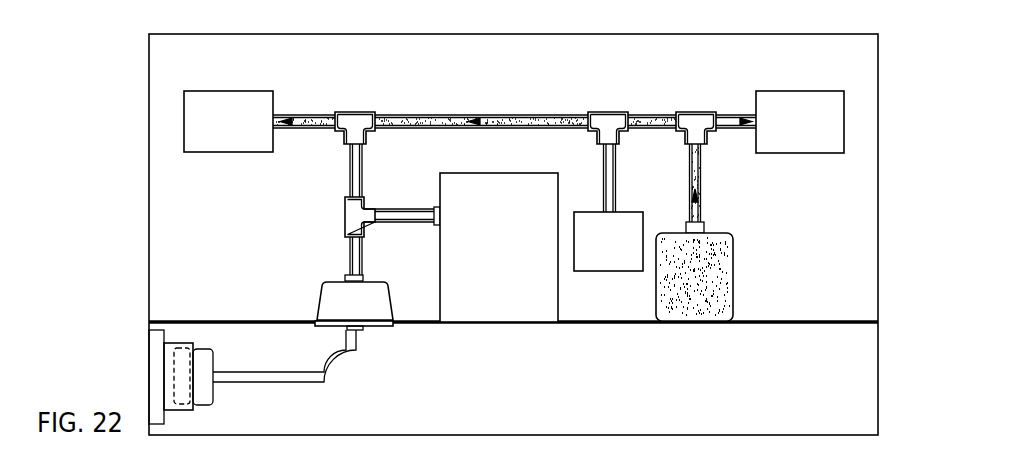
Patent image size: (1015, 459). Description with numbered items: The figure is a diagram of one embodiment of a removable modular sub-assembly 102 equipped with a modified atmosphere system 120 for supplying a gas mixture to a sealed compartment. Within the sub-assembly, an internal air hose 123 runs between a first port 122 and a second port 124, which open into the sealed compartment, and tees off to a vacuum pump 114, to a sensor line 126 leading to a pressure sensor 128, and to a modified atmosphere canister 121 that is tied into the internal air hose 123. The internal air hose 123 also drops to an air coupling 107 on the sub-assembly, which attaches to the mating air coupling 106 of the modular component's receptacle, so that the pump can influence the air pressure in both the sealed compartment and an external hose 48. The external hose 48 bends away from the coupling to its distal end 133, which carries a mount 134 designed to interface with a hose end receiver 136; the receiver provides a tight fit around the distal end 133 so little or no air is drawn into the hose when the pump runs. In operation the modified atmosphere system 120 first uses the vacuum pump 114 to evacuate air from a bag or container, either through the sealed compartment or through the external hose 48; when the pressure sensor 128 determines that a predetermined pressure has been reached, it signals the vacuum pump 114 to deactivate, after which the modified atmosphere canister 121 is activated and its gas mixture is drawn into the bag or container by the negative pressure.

The modified atmosphere system 120 is at (878, 84).
The modular sub-assembly 102 is at (905, 204).
The first port 122 is at (252, 91).
The second port 124 is at (816, 91).
The internal air hose 123 is at (418, 116).
The vacuum pump 114 is at (525, 173).
The sensor line 126 is at (616, 178).
The pressure sensor 128 is at (634, 212).
The modified atmosphere canister 121 is at (733, 255).
The air coupling 107 is at (373, 282).
The air coupling 106 is at (384, 328).
The external hose 48 is at (307, 383).
The mount 134 is at (214, 389).
The hose end receiver 136 is at (177, 343).
The distal end 133 is at (168, 358).